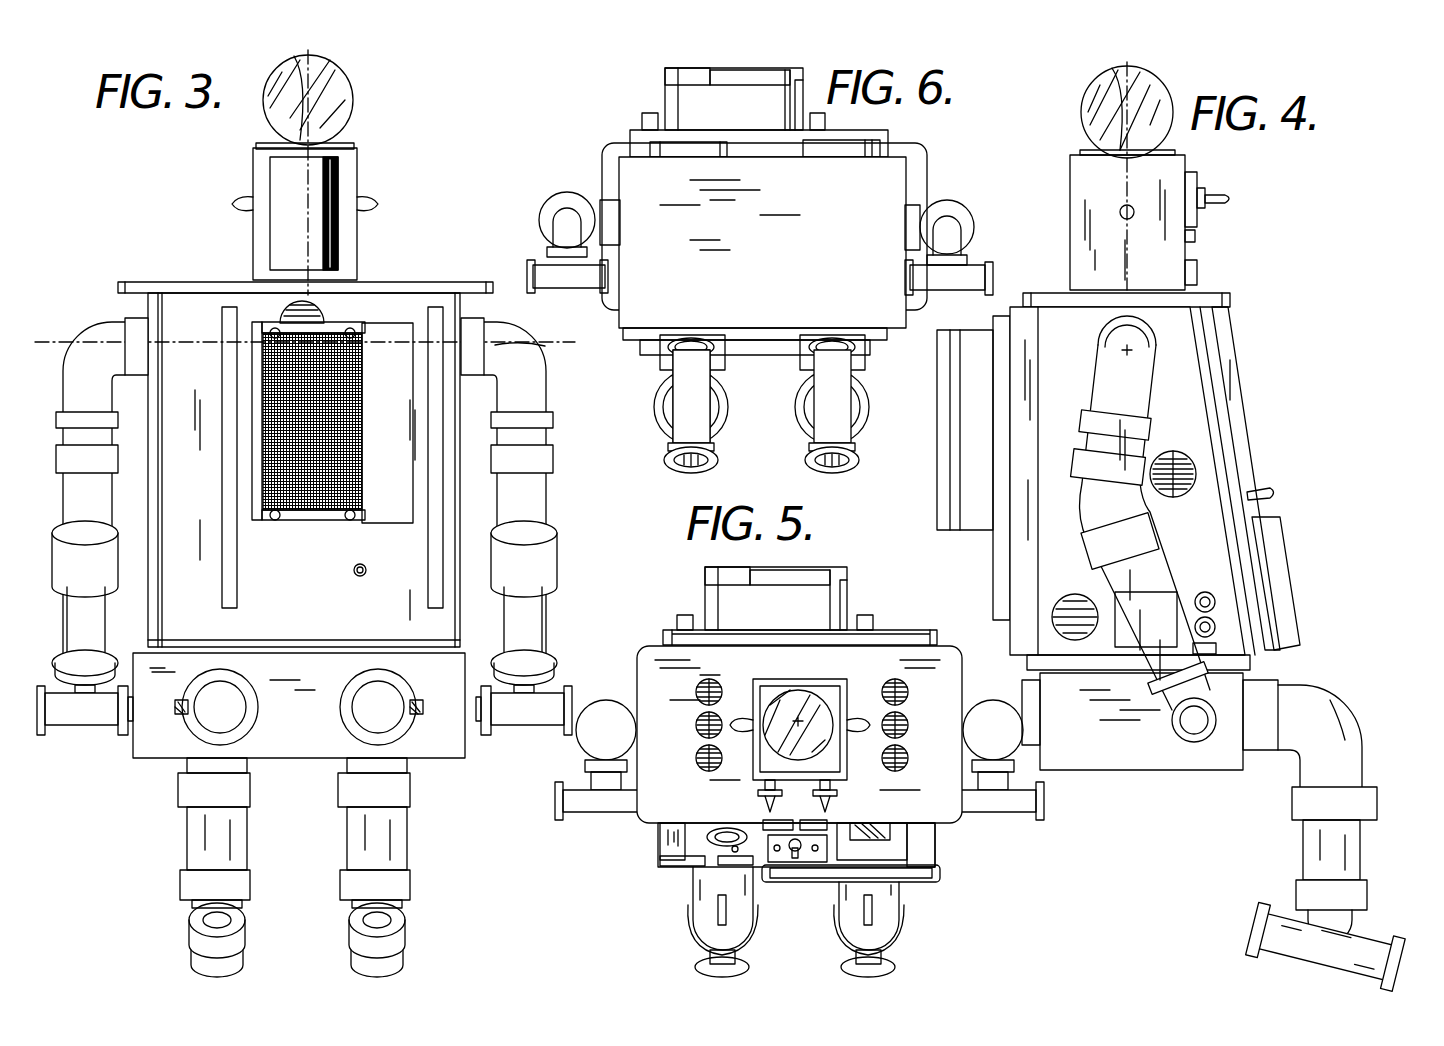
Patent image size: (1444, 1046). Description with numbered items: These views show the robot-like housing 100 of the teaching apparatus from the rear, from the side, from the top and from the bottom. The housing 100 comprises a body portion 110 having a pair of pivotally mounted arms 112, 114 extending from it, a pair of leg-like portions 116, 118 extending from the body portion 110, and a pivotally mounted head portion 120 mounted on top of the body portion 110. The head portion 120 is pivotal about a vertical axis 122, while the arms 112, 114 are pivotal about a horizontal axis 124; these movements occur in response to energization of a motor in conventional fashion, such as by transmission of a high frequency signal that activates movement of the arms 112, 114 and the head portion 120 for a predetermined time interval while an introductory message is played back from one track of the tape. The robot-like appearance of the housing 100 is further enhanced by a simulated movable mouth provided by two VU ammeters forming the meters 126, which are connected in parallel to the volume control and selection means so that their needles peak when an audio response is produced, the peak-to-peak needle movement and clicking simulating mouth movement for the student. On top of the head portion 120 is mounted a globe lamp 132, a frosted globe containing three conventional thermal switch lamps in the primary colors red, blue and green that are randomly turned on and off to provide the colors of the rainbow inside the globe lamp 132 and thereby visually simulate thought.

In FIG. 3, the robot-like housing 100 is at (432, 262).
In FIG. 4, the robot-like housing 100 is at (1045, 283).
In FIG. 3, the body portion 110 is at (448, 282).
In FIG. 6, the body portion 110 is at (890, 192).
In FIG. 5, the body portion 110 is at (645, 642).
In FIG. 4, the body portion 110 is at (1008, 652).
In FIG. 3, the arm 112 is at (548, 390).
In FIG. 6, the arm 112 is at (952, 213).
In FIG. 5, the arm 112 is at (578, 748).
In FIG. 4, the arm 112 is at (1142, 402).
In FIG. 3, the arm 114 is at (86, 330).
In FIG. 6, the arm 114 is at (569, 202).
In FIG. 5, the arm 114 is at (1015, 768).
In FIG. 3, the leg-like portion 116 is at (410, 828).
In FIG. 6, the leg-like portion 116 is at (853, 425).
In FIG. 5, the leg-like portion 116 is at (690, 887).
In FIG. 4, the leg-like portion 116 is at (1358, 770).
In FIG. 3, the leg-like portion 118 is at (187, 836).
In FIG. 6, the leg-like portion 118 is at (672, 412).
In FIG. 5, the leg-like portion 118 is at (896, 897).
In FIG. 3, the head portion 120 is at (357, 244).
In FIG. 5, the head portion 120 is at (848, 690).
In FIG. 4, the head portion 120 is at (1185, 253).
In FIG. 3, the vertical axis 122 is at (312, 84).
In FIG. 5, the vertical axis 122 is at (792, 700).
In FIG. 4, the vertical axis 122 is at (1108, 90).
In FIG. 3, the horizontal axis 124 is at (548, 352).
In FIG. 4, the horizontal axis 124 is at (1116, 346).
In FIG. 4, the meter 126 is at (1197, 276).
In FIG. 3, the globe lamp 132 is at (352, 102).
In FIG. 5, the globe lamp 132 is at (806, 702).
In FIG. 4, the globe lamp 132 is at (1084, 118).